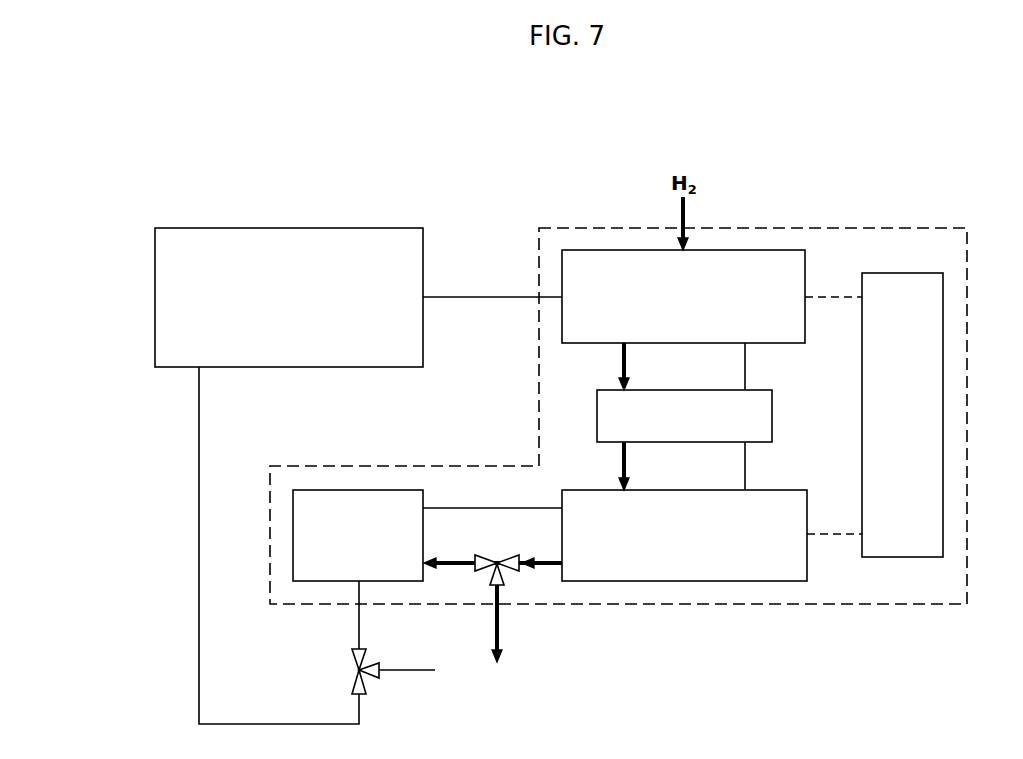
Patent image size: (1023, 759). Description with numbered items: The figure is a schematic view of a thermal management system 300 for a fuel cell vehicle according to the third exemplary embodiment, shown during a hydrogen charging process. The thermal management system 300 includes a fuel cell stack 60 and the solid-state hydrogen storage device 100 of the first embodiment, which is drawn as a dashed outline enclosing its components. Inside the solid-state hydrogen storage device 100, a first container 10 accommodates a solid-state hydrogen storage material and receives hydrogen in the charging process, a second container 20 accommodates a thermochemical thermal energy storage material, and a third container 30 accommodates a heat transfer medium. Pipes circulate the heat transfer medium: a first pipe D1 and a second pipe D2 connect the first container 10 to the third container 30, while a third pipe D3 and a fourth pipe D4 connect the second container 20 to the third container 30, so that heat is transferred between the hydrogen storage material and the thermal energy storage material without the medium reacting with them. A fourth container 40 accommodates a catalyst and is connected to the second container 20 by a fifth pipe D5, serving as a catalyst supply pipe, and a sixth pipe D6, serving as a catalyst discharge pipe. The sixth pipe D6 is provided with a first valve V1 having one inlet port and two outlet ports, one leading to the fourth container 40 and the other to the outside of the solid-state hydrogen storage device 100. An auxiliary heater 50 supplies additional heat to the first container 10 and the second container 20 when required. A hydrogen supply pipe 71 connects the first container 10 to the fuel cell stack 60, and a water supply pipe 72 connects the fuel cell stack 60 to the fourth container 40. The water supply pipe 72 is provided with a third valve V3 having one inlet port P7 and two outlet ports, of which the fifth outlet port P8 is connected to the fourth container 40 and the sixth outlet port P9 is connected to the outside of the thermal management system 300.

The thermal management system 300 is at (546, 114).
The solid-state hydrogen storage device 100 is at (930, 226).
The first container 10 is at (603, 250).
The second container 20 is at (724, 582).
The third container 30 is at (772, 418).
The fourth container 40 is at (357, 490).
The auxiliary heater 50 is at (943, 338).
The fuel cell stack 60 is at (302, 309).
The hydrogen supply pipe 71 is at (493, 297).
The water supply pipe 72 is at (199, 535).
The first pipe D1 is at (745, 368).
The second pipe D2 is at (621, 367).
The third pipe D3 is at (621, 466).
The fourth pipe D4 is at (745, 468).
The fifth pipe D5 is at (477, 508).
The sixth pipe D6 is at (556, 568).
The first valve V1 is at (493, 597).
The third valve V3 is at (377, 671).
The inlet port P7 is at (366, 693).
The fifth outlet port P8 is at (364, 651).
The sixth outlet port P9 is at (381, 676).